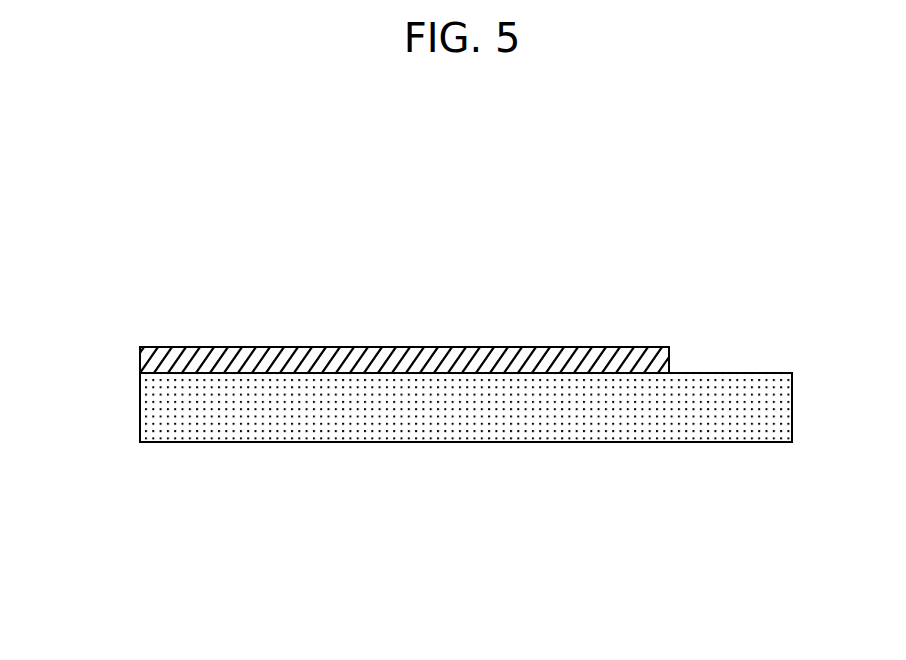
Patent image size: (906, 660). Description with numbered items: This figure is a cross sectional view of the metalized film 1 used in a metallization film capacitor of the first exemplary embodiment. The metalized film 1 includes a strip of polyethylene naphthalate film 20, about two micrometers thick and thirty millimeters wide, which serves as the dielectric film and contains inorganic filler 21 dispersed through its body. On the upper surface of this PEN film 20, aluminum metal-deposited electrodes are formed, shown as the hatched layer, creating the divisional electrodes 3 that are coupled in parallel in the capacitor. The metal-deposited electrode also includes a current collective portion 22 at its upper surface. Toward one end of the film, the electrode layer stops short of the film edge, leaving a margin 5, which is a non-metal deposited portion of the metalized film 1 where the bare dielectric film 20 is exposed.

The metalized film 1 is at (167, 470).
The divisional electrodes 3 is at (547, 332).
The margin 5 is at (712, 358).
The polyethylene naphthalate film 20 is at (686, 458).
The inorganic filler 21 is at (453, 420).
The current collective portion 22 is at (222, 332).